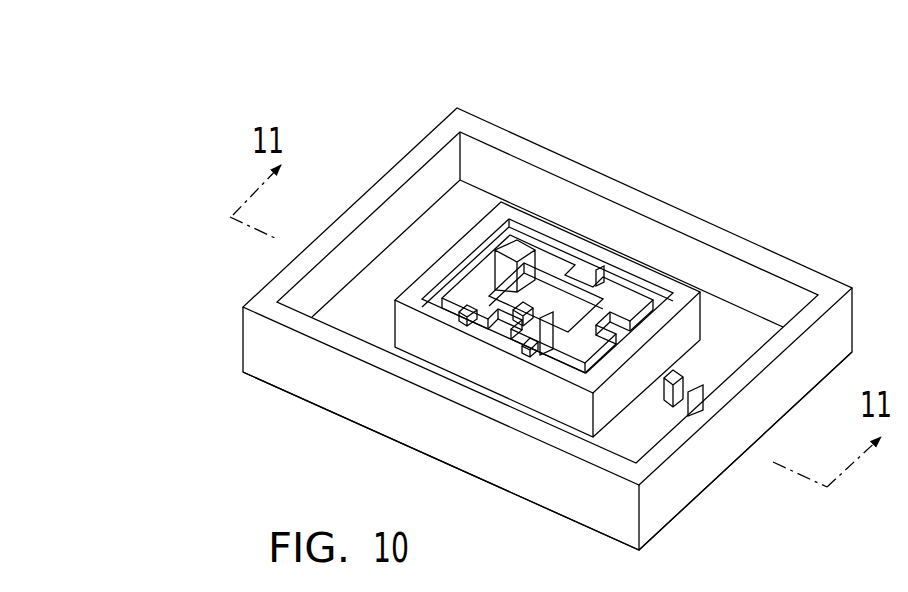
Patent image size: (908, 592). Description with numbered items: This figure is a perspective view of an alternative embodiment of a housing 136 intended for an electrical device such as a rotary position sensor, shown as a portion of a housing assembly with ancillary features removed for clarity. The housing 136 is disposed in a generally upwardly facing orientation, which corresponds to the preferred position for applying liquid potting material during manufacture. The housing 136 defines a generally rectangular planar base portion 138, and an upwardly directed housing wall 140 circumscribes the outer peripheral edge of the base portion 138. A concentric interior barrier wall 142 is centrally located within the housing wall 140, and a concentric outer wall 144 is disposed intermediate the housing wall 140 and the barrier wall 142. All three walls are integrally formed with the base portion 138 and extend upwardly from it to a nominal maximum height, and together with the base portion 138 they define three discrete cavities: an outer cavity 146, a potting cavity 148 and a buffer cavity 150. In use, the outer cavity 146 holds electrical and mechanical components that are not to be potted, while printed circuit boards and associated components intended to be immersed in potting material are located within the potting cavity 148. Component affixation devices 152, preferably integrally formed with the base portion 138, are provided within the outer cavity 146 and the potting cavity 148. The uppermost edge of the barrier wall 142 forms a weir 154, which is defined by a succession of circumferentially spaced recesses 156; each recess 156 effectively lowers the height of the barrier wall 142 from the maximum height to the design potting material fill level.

The housing 136 is at (688, 176).
The base portion 138 is at (640, 428).
The housing wall 140 is at (800, 277).
The barrier wall 142 is at (453, 293).
The outer wall 144 is at (565, 398).
The outer cavity 146 is at (737, 352).
The potting cavity 148 is at (507, 307).
The buffer cavity 150 is at (488, 238).
The component affixation devices 152 is at (542, 313).
The weir 154 is at (631, 256).
The recesses 156 is at (520, 303).